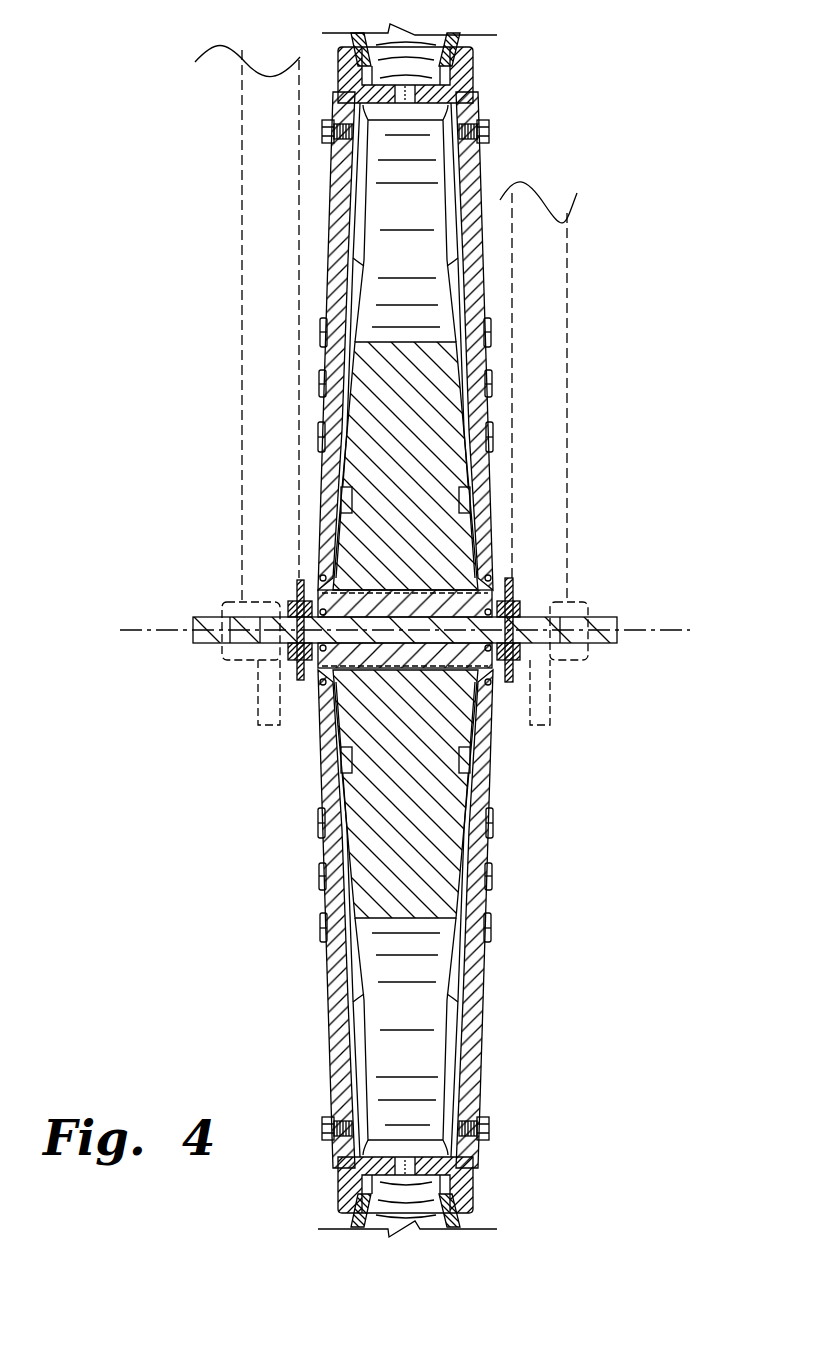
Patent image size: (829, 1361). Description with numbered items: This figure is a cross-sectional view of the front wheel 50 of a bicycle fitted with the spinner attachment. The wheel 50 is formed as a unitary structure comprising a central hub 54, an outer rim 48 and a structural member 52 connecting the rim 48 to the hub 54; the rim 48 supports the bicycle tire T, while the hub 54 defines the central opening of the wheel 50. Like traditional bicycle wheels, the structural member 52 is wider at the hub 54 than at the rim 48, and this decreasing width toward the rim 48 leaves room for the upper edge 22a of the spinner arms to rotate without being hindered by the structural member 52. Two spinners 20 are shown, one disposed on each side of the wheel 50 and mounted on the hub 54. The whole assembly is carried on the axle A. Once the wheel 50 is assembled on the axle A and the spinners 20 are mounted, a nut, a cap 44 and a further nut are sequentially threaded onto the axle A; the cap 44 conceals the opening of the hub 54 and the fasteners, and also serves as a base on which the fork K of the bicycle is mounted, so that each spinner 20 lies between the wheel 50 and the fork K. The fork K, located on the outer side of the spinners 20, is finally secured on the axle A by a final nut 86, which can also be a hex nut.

The front wheel 50 is at (492, 53).
The rim 48 is at (475, 85).
The upper edge of the spinner arms 22a is at (477, 108).
The spinner 20 is at (328, 192).
The structural member 52 is at (410, 378).
The hub 54 is at (438, 586).
The axle A is at (618, 630).
The cap 44 is at (508, 683).
The final nut 86 is at (573, 663).
The bicycle tire T is at (338, 68).
The fork K is at (265, 296).